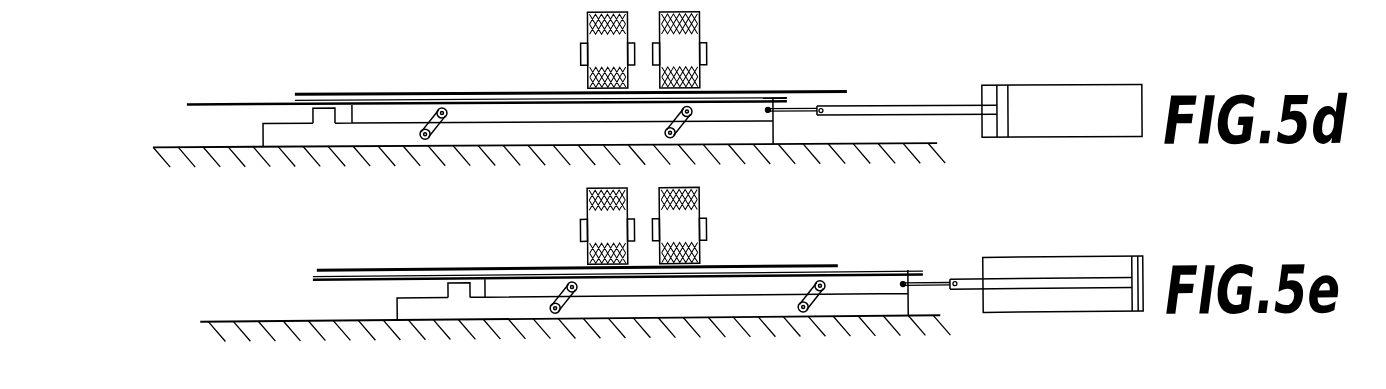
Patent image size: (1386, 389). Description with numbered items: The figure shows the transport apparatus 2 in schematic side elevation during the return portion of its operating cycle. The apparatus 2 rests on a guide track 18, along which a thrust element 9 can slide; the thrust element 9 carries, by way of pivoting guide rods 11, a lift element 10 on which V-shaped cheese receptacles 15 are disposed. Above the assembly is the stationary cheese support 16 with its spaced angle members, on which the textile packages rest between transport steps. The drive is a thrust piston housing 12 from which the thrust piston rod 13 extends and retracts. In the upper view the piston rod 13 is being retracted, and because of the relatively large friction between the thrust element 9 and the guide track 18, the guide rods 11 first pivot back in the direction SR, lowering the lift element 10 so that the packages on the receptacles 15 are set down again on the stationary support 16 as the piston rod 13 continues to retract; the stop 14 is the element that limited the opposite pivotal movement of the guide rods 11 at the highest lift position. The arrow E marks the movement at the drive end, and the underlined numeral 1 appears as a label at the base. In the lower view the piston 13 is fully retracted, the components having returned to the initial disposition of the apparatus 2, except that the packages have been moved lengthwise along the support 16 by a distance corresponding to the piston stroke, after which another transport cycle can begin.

In FIG. 5d, the floor / machine base 1 is at (277, 194).
In FIG. 5e, the floor / machine base 1 is at (335, 314).
In FIG. 5d, the transport apparatus 2 is at (410, 60).
In FIG. 5e, the transport apparatus 2 is at (441, 246).
In FIG. 5d, the thrust element 9 is at (750, 137).
In FIG. 5e, the thrust element 9 is at (881, 303).
In FIG. 5d, the lift element 10 is at (512, 110).
In FIG. 5e, the lift element 10 is at (853, 283).
In FIG. 5d, the guide rods 11 is at (447, 123).
In FIG. 5e, the guide rods 11 is at (568, 283).
In FIG. 5d, the thrust piston housing 12 is at (1087, 60).
In FIG. 5e, the thrust piston housing 12 is at (1077, 240).
In FIG. 5d, the thrust piston rod 13 is at (883, 107).
In FIG. 5e, the thrust piston rod 13 is at (970, 280).
In FIG. 5d, the stop 14 is at (327, 114).
In FIG. 5e, the stop 14 is at (467, 293).
In FIG. 5d, the V-shaped cheese receptacle 15 is at (229, 101).
In FIG. 5e, the V-shaped cheese receptacle 15 is at (344, 274).
In FIG. 5d, the stationary cheese support 16 is at (822, 90).
In FIG. 5e, the stationary cheese support 16 is at (748, 265).
In FIG. 5d, the guide track 18 is at (200, 145).
In FIG. 5e, the guide track 18 is at (296, 318).
In FIG. 5d, the pivot-back direction SR is at (428, 112).
In FIG. 5d, the direction of movement E is at (922, 90).